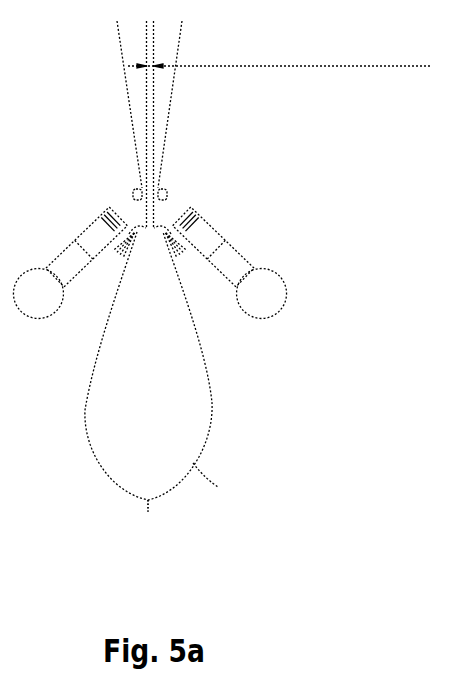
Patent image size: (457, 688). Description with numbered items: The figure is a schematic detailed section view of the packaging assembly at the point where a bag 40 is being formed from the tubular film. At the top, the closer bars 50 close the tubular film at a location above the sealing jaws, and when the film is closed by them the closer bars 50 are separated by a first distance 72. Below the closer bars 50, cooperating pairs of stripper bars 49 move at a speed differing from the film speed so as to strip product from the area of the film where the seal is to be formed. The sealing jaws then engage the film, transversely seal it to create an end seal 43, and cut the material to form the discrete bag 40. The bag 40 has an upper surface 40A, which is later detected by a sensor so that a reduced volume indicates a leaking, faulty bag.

The first distance 72 is at (413, 56).
The closer bars 50 is at (137, 190).
The bag 40 is at (156, 347).
The stripper bars 49 is at (132, 235).
The upper surface of the bag 40A is at (193, 463).
The end seal 43 is at (149, 499).